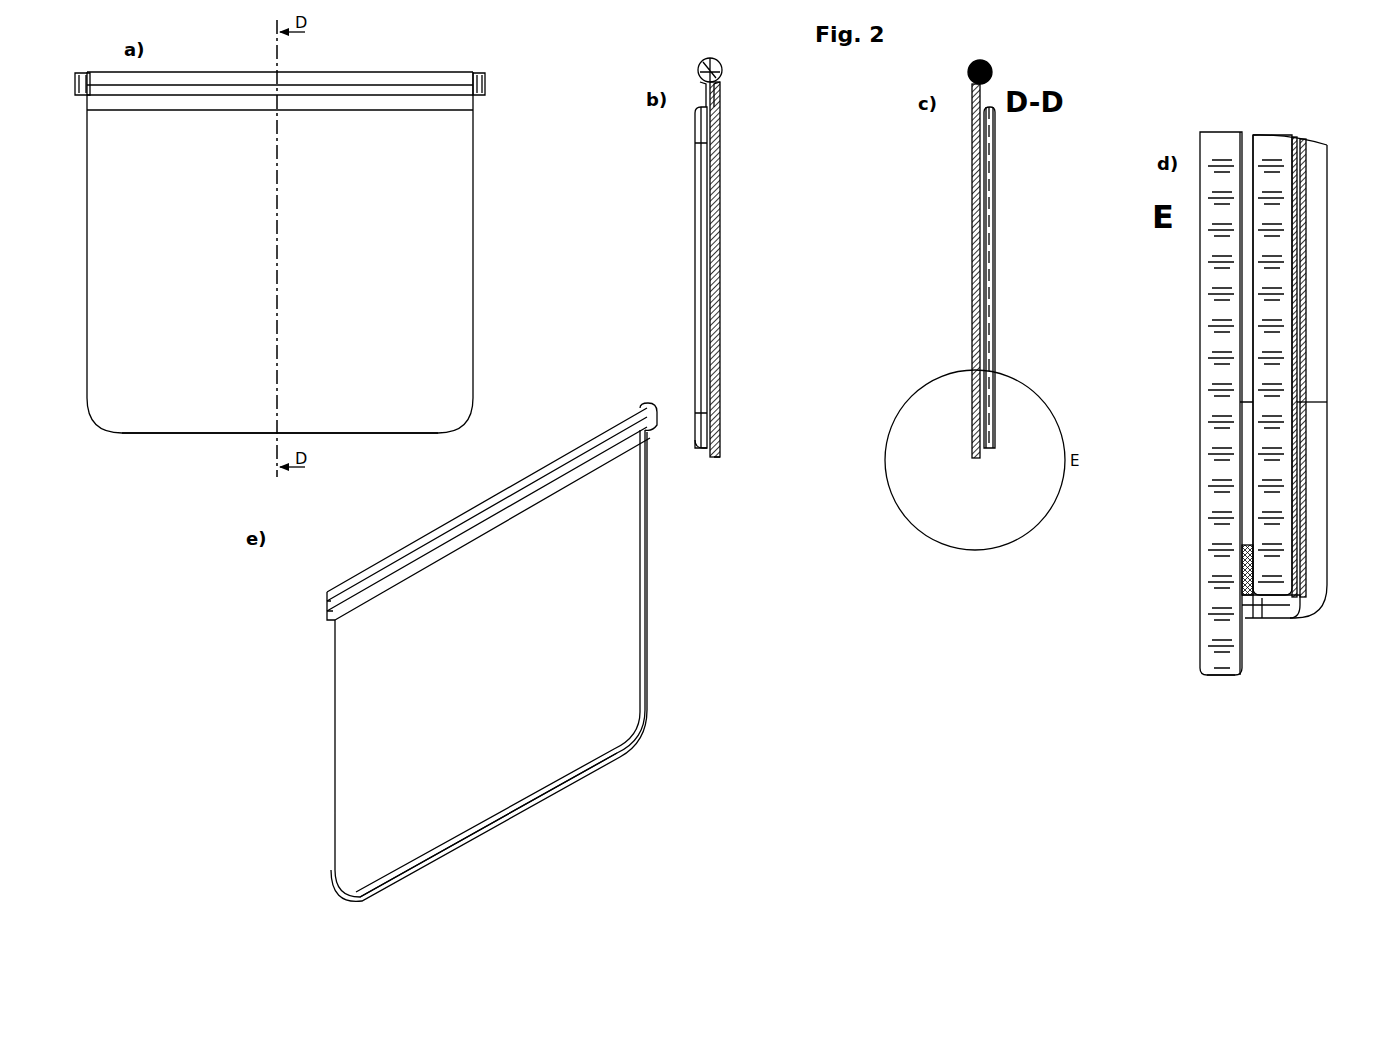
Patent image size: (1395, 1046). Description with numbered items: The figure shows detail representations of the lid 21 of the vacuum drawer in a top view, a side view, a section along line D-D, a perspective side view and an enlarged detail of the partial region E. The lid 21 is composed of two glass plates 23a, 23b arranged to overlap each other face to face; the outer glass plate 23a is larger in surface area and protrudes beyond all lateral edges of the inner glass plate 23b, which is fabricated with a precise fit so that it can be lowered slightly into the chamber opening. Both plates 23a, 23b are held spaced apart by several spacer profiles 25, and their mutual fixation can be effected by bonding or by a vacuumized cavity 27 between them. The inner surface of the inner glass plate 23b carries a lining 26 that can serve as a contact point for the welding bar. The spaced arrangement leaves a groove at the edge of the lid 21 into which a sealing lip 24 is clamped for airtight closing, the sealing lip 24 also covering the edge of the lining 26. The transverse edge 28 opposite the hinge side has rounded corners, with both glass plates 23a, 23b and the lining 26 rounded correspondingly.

The lid 21 is at (488, 240).
The outer glass plate 23a is at (712, 165).
The inner glass plate 23b is at (1270, 152).
The sealing lip 24 is at (1283, 615).
The spacer profile 25 is at (1248, 546).
The lining 26 is at (1316, 476).
The vacuumized cavity 27 is at (1247, 348).
The transverse edge 28 is at (367, 443).